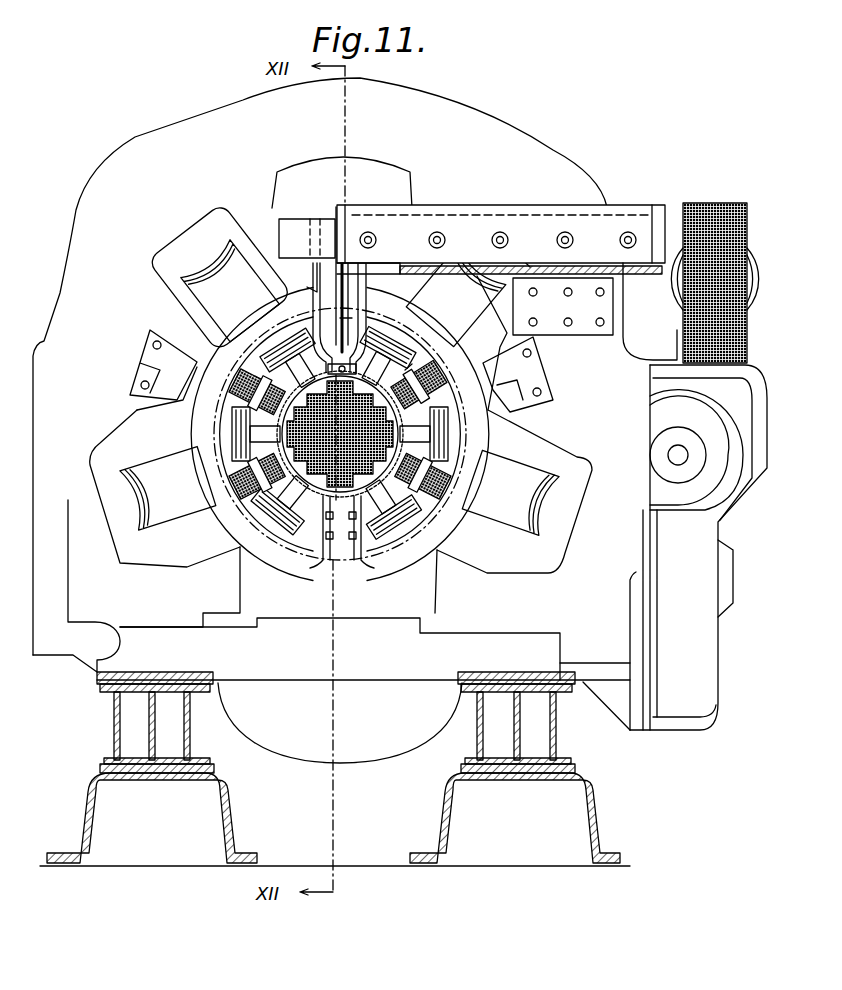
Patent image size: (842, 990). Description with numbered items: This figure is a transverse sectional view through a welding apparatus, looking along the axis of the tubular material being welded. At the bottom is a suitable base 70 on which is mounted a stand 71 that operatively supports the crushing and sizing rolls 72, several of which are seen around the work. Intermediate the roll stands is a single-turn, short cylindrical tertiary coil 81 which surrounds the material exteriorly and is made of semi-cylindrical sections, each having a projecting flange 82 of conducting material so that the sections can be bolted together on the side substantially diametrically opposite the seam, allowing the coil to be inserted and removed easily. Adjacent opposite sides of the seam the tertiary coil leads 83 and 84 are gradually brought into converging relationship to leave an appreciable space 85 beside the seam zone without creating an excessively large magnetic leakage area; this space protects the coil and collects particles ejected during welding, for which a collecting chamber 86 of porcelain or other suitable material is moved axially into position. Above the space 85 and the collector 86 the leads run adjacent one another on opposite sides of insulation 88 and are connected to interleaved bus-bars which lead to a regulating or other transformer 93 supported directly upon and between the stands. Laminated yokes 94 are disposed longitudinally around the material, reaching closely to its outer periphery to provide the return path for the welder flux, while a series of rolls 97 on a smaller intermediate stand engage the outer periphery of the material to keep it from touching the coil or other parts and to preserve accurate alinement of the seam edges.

The base 70 is at (228, 820).
The stand 71 is at (65, 637).
The crushing and sizing rolls 72 is at (203, 262).
The tertiary coil 81 is at (417, 507).
The projecting flange 82 is at (340, 557).
The tertiary coil lead 83 is at (333, 305).
The tertiary coil lead 84 is at (362, 328).
The space 85 is at (354, 318).
The collecting chamber 86 is at (410, 367).
The insulation 88 is at (350, 268).
The transformer 93 is at (677, 258).
The laminated yokes 94 is at (440, 480).
The rolls 97 is at (422, 433).